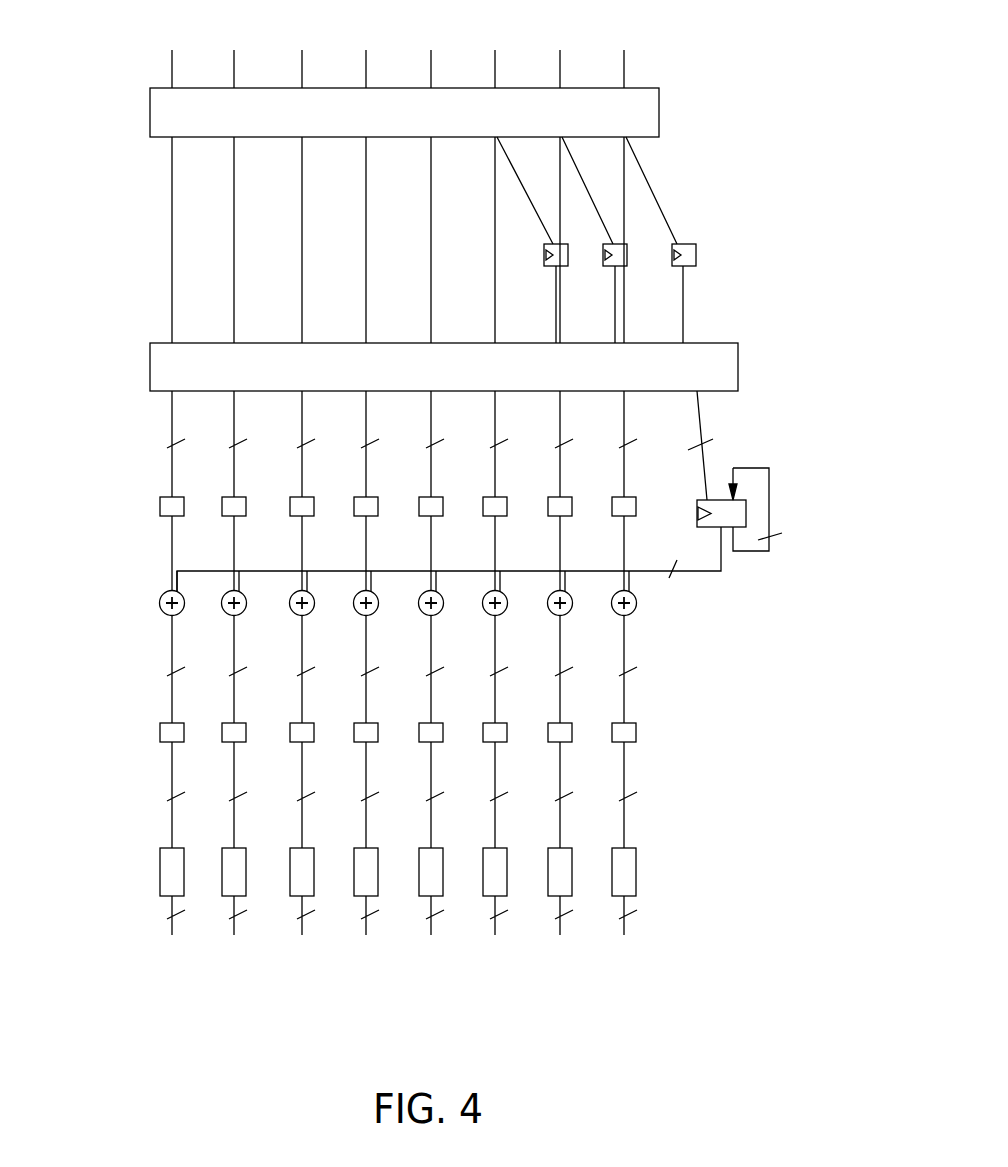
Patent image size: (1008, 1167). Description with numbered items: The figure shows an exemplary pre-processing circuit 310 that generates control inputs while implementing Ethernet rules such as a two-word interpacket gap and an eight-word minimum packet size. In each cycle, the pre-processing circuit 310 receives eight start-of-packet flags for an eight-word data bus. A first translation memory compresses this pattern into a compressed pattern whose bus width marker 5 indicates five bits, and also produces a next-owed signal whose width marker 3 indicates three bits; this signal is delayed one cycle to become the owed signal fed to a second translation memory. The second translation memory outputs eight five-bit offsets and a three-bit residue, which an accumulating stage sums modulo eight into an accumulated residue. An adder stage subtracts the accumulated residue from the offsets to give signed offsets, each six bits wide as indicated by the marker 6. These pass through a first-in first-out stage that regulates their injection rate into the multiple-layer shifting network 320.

The pre-processing circuit 310 is at (687, 1123).
The multiple-layer shifting network 320 is at (395, 945).
The 3-bit residue bus 3 is at (490, 491).
The 5-bit offset bus 5 is at (395, 444).
The 6-bit signed offset bus 6 is at (395, 735).